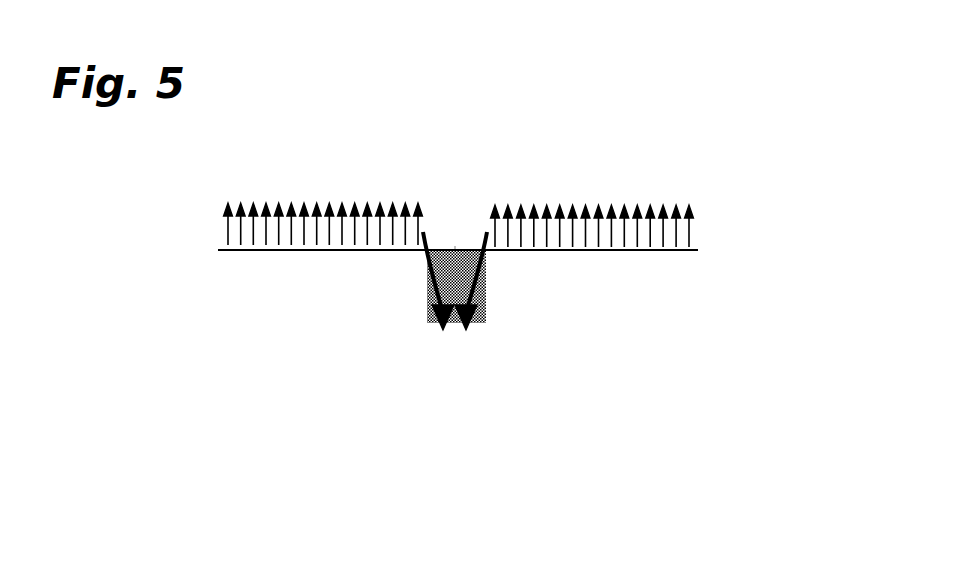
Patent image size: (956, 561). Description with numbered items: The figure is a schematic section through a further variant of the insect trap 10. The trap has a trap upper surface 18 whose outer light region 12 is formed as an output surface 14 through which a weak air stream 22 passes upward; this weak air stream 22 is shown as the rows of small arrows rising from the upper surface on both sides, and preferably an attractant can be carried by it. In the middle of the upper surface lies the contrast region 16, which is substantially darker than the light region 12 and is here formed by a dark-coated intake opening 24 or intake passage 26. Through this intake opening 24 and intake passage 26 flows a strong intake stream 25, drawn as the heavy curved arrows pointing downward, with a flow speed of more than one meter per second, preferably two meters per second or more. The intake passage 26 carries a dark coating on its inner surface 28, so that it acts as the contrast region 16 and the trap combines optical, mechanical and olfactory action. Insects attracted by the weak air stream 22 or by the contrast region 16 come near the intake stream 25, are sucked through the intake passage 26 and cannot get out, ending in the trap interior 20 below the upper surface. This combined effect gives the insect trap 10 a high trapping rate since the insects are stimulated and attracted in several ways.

The insect trap 10 is at (190, 354).
The light region 12 is at (689, 252).
The output surface 14 is at (533, 273).
The contrast region 16 is at (455, 241).
The trap upper surface 18 is at (222, 245).
The trap interior 20 is at (550, 397).
The weak air stream 22 is at (690, 233).
The intake opening 24 is at (431, 291).
The intake stream 25 is at (478, 242).
The intake passage 26 is at (396, 321).
The inner surface 28 is at (430, 272).